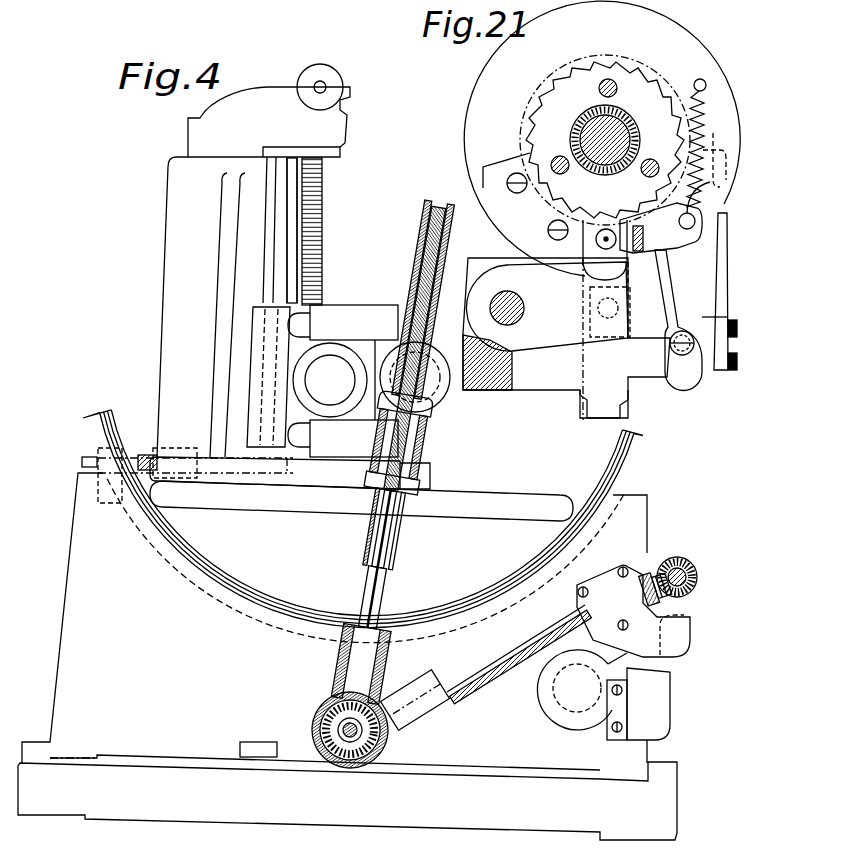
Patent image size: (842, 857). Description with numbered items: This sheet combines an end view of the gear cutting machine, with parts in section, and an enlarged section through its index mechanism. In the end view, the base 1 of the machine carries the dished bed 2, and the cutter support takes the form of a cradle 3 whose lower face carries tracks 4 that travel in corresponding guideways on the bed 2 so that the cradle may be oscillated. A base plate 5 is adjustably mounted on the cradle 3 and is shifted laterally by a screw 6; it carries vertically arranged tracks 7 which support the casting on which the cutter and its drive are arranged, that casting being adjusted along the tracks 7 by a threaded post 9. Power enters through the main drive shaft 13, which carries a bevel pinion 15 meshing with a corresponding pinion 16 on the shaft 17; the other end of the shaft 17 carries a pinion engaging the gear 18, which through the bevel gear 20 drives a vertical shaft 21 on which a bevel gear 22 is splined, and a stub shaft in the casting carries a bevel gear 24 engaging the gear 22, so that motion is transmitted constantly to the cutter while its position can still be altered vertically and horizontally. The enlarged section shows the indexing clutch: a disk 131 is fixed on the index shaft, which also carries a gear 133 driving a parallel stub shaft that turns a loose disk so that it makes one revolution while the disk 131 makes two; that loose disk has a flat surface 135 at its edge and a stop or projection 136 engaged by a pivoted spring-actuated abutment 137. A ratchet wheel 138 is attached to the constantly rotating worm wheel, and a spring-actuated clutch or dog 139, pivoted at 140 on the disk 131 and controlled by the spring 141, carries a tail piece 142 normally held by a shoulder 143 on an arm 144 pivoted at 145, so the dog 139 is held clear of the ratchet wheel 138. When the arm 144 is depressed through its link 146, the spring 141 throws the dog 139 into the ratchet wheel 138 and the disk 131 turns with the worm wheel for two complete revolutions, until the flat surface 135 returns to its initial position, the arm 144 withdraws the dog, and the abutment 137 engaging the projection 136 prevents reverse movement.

In FIG. 4, the base 1 is at (347, 801).
In FIG. 4, the dished bed 2 is at (346, 621).
In FIG. 4, the cradle 3 is at (361, 501).
In FIG. 4, the tracks 4 is at (640, 463).
In FIG. 4, the base plate 5 is at (256, 475).
In FIG. 4, the screw 6 is at (145, 456).
In FIG. 4, the tracks 7 is at (293, 213).
In FIG. 4, the threaded post 9 is at (318, 248).
In FIG. 4, the main drive shaft 13 is at (694, 590).
In FIG. 4, the bevel pinion 15 is at (697, 558).
In FIG. 4, the pinion 16 is at (661, 566).
In FIG. 4, the shaft 17 is at (507, 650).
In FIG. 4, the gear 18 is at (386, 763).
In FIG. 4, the bevel gear 20 is at (333, 702).
In FIG. 4, the vertical shaft 21 is at (385, 583).
In FIG. 4, the bevel gear 22 is at (430, 411).
In FIG. 4, the bevel gear 24 is at (446, 397).
In FIG. 21, the disk 131 is at (602, 138).
In FIG. 21, the gear 133 is at (682, 320).
In FIG. 21, the flat surface 135 is at (613, 126).
In FIG. 21, the stop 136 is at (715, 149).
In FIG. 21, the abutment 137 is at (707, 291).
In FIG. 21, the ratchet wheel 138 is at (605, 140).
In FIG. 21, the clutch or dog 139 is at (665, 217).
In FIG. 21, the pivot 140 is at (596, 241).
In FIG. 21, the spring 141 is at (695, 81).
In FIG. 21, the tail piece 142 is at (597, 282).
In FIG. 21, the shoulder 143 is at (628, 303).
In FIG. 21, the arm 144 is at (653, 345).
In FIG. 21, the pivot 145 is at (507, 291).
In FIG. 21, the link 146 is at (604, 396).